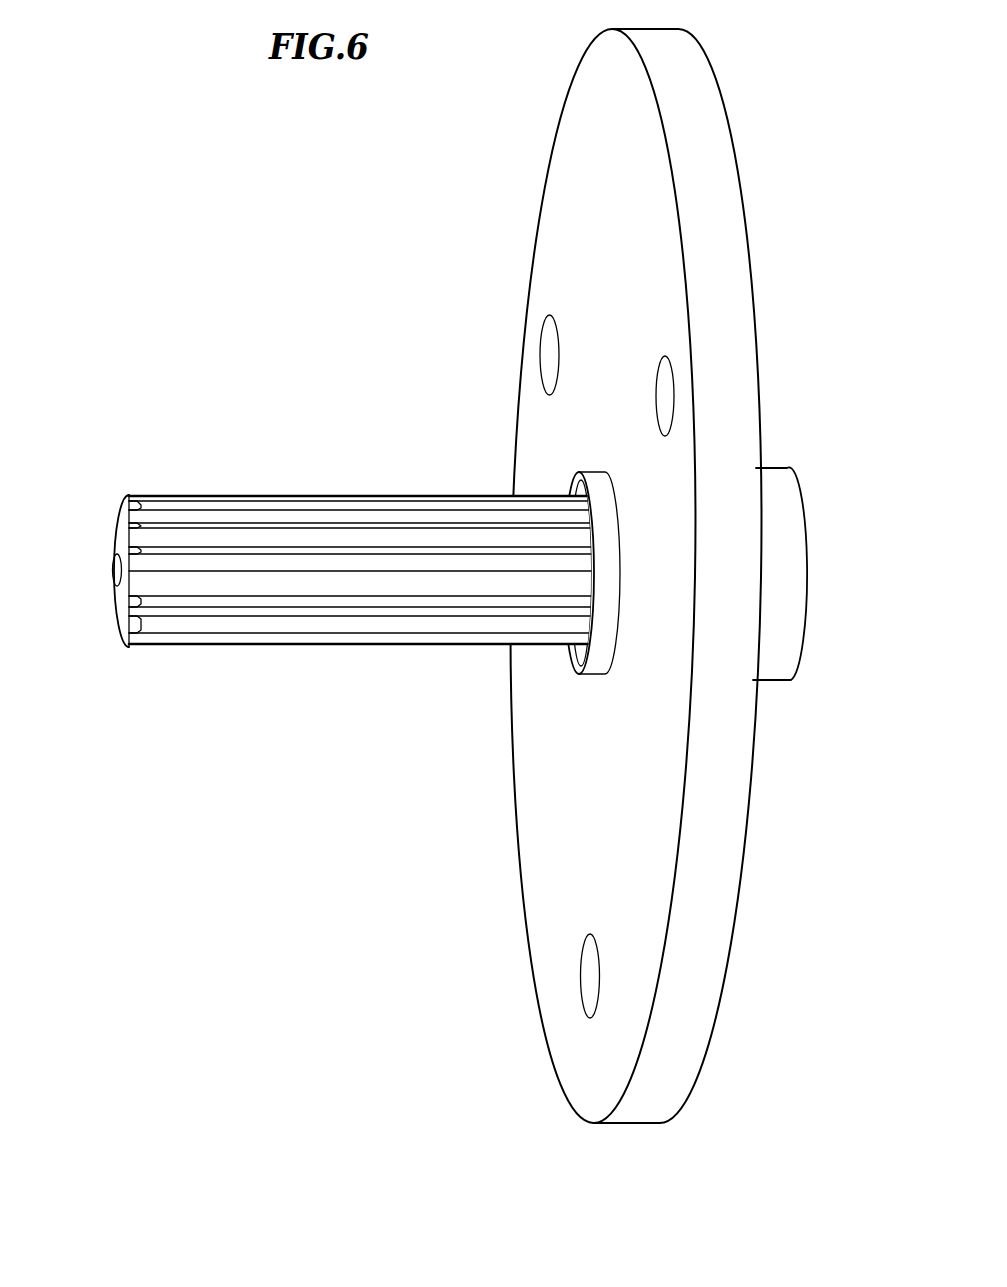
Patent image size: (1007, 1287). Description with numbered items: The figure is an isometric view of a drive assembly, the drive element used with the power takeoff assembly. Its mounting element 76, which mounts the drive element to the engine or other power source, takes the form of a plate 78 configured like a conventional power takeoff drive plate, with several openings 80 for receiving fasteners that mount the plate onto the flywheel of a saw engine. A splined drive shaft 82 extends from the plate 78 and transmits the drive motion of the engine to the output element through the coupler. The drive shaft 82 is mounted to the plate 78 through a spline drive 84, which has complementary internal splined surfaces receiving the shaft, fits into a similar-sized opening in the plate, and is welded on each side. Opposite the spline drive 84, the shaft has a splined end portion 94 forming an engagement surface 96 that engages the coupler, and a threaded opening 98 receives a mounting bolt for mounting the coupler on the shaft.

The mounting element 76 is at (543, 821).
The plate 78 is at (540, 914).
The openings 80 is at (548, 352).
The drive shaft 82 is at (252, 646).
The spline drive 84 is at (767, 663).
The end portion 94 is at (138, 692).
The engagement surface 96 is at (128, 478).
The threaded opening 98 is at (111, 568).